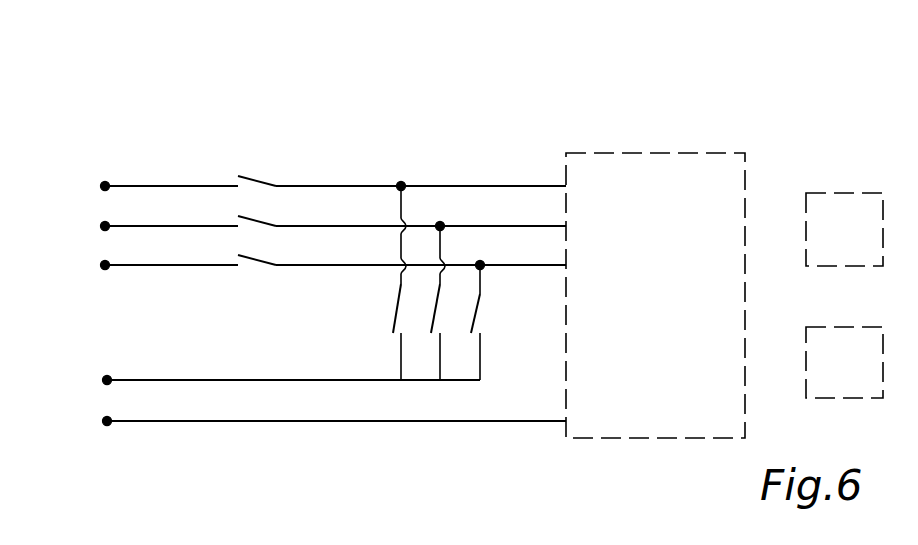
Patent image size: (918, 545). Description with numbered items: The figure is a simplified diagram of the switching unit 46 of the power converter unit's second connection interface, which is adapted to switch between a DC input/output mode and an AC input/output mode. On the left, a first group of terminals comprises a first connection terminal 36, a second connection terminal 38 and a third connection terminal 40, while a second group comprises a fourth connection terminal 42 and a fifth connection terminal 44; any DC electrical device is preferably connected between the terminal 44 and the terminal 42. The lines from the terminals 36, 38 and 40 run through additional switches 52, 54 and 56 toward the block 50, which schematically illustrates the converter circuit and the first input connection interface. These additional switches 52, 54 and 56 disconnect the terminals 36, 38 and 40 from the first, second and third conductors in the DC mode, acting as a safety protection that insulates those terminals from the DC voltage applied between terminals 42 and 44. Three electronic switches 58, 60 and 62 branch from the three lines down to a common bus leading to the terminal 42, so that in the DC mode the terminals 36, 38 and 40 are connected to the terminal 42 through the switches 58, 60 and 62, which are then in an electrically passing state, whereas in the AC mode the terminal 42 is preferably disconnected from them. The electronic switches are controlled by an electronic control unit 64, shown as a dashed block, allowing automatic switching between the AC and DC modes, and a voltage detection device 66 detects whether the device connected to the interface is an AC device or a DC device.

The first connection terminal 36 is at (100, 185).
The second connection terminal 38 is at (100, 228).
The third connection terminal 40 is at (100, 268).
The fourth connection terminal 42 is at (102, 379).
The fifth connection terminal 44 is at (102, 423).
The switching unit 46 is at (450, 170).
The circuit and first input connection interface 50 is at (655, 295).
The additional switch 52 is at (258, 175).
The additional switch 54 is at (258, 217).
The additional switch 56 is at (258, 268).
The electronic switch 58 is at (397, 310).
The electronic switch 60 is at (434, 321).
The electronic switch 62 is at (478, 315).
The electronic control unit 64 is at (844, 229).
The voltage detection device 66 is at (844, 362).